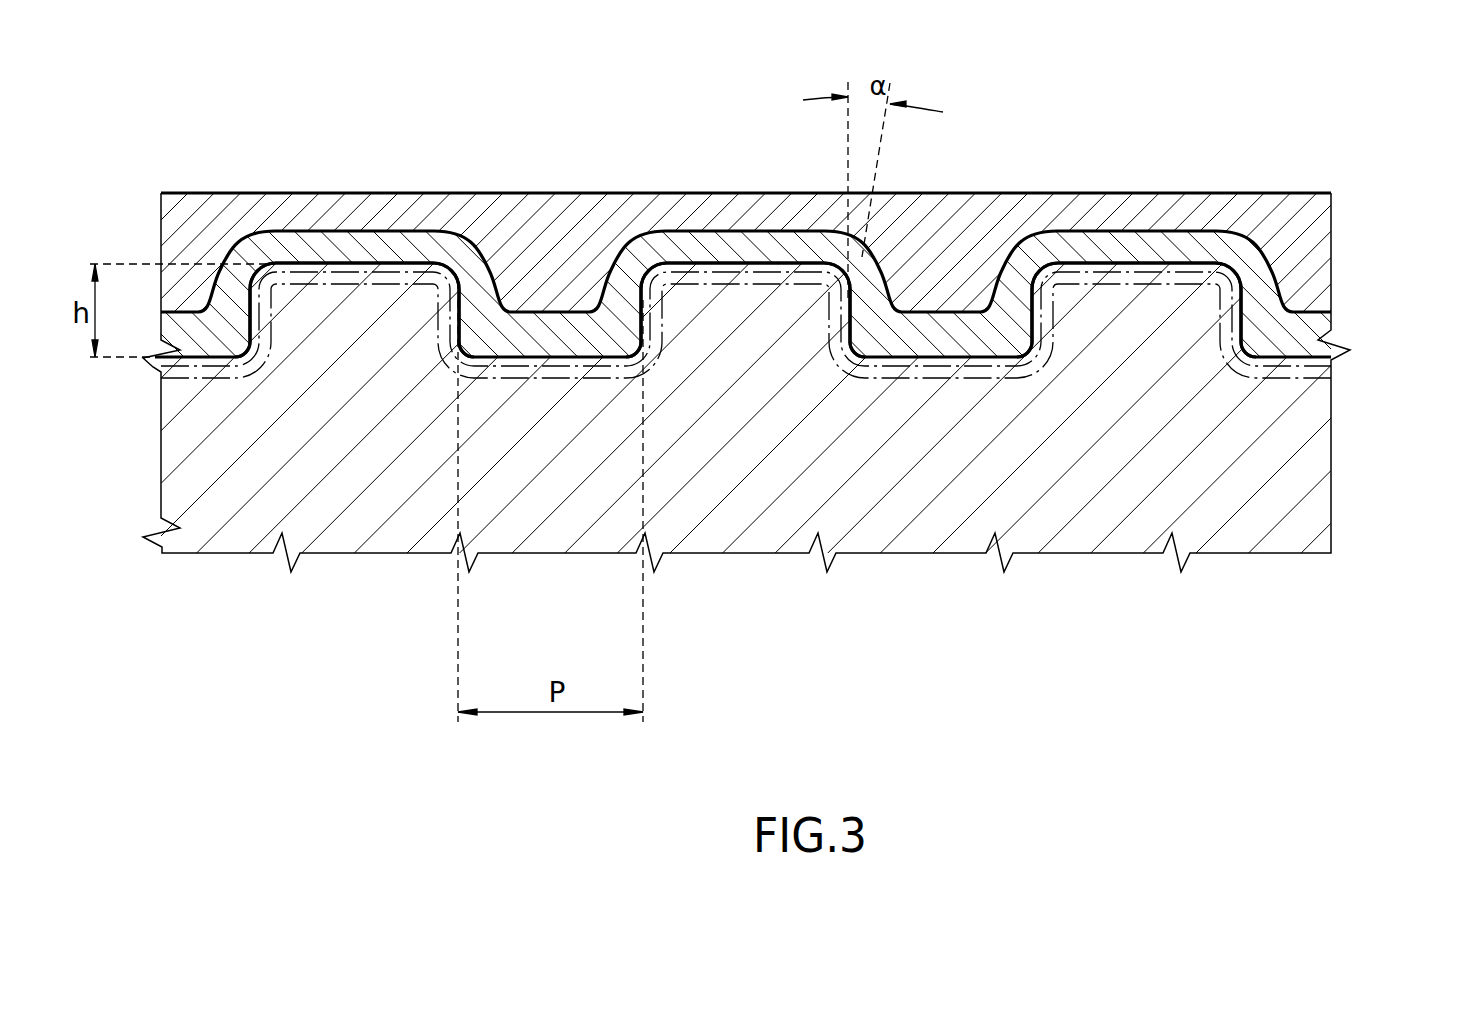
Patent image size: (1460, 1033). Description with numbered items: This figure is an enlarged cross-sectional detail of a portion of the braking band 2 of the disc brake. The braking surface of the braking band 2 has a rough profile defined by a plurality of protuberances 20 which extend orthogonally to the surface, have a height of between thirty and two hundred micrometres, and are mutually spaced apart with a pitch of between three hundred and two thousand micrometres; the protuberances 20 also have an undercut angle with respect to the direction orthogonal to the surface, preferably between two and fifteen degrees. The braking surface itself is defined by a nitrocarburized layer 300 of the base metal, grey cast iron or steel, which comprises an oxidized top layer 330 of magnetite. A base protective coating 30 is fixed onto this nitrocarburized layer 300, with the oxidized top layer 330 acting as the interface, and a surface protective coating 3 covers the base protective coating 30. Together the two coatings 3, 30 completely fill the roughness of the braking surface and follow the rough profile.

The braking band 2 is at (1258, 525).
The surface protective coating 3 is at (1297, 228).
The protuberances 20 is at (368, 310).
The base protective coating 30 is at (1335, 333).
The nitrocarburized layer 300 is at (1346, 386).
The oxidized top layer 330 is at (1295, 372).